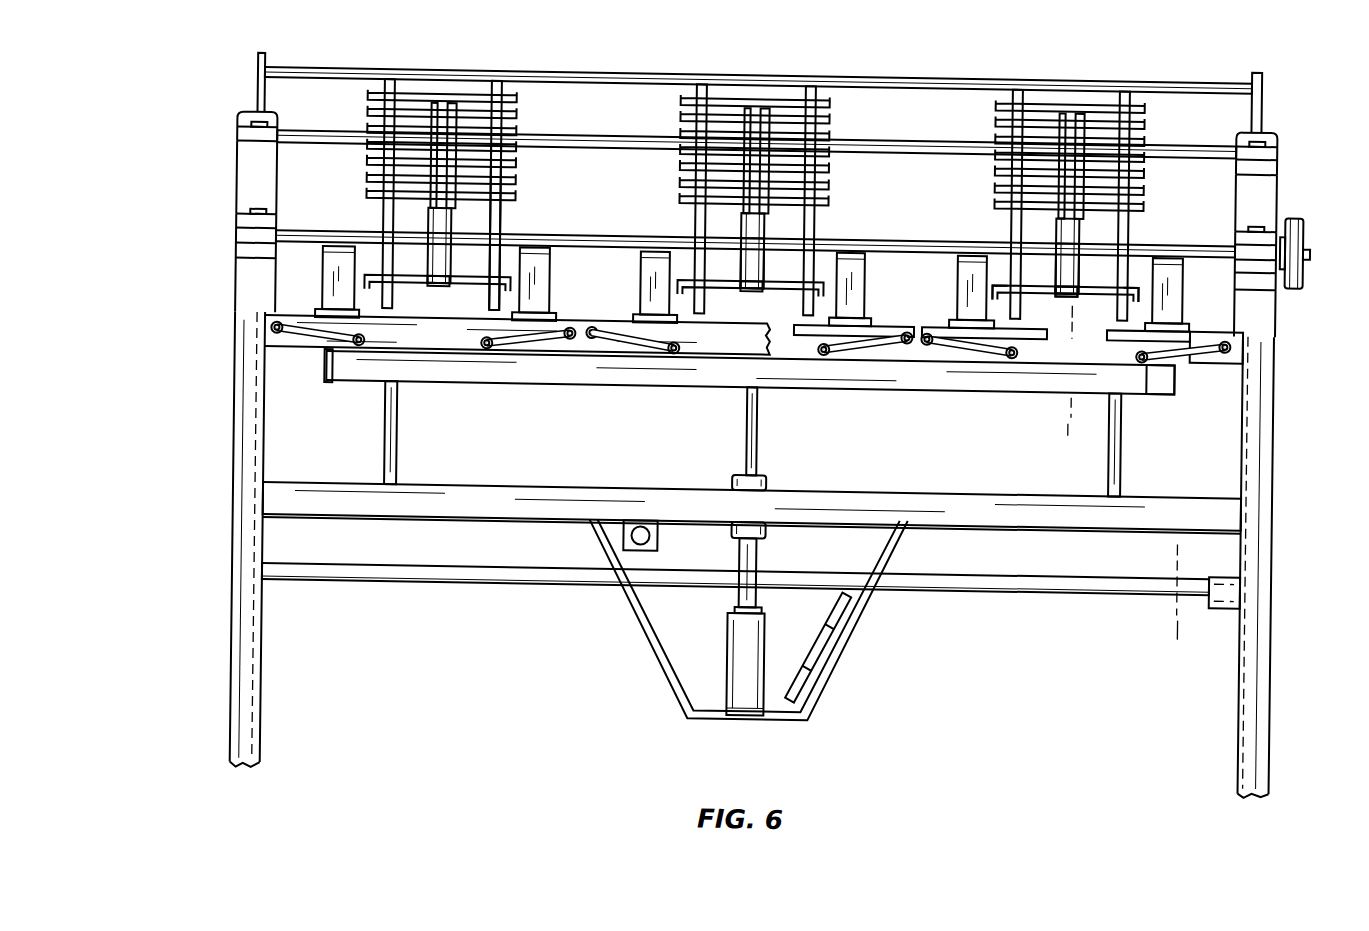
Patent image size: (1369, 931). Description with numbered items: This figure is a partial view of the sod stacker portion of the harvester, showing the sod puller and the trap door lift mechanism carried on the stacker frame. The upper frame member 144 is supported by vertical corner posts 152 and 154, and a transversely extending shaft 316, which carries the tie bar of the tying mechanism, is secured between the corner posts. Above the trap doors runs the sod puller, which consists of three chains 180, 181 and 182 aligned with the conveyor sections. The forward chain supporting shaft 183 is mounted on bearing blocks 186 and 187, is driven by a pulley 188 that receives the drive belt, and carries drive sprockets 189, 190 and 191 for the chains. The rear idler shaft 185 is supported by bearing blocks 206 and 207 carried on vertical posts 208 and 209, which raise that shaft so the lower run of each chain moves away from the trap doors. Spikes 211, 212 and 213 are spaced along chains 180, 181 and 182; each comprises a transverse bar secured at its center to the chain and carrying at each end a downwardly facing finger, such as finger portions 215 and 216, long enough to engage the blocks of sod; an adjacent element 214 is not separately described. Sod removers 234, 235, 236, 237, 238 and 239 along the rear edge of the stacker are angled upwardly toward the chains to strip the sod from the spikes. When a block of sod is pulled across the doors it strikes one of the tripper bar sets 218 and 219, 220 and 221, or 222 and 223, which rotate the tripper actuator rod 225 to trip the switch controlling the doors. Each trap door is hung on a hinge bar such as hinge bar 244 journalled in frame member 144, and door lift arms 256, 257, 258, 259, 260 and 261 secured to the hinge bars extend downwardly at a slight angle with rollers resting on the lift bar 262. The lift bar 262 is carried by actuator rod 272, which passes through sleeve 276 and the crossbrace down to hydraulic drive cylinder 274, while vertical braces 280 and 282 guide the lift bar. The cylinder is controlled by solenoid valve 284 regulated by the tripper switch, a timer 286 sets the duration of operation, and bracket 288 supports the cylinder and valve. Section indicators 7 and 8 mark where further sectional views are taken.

The tripper actuator rod 225 is at (944, 68).
The rear idler shaft 185 is at (572, 130).
The forward chain supporting shaft 183 is at (561, 228).
The bearing block 207 is at (240, 150).
The vertical post 209 is at (245, 188).
The bearing block 187 is at (245, 243).
The bearing block 206 is at (1258, 136).
The vertical post 208 is at (1252, 185).
The bearing block 186 is at (1260, 224).
The pulley 188 is at (1292, 223).
The vertical corner post 154 is at (238, 460).
The vertical corner post 152 is at (1278, 474).
The tripper bar 223 is at (388, 196).
The tripper bar 222 is at (505, 188).
The drive sprocket 191 is at (495, 212).
The sod puller chain 182 is at (430, 213).
The sod spikes 213 is at (468, 268).
The tripper bar 221 is at (700, 201).
The tripper bar 220 is at (816, 188).
The sod puller chain 181 is at (746, 212).
The drive sprocket 190 is at (769, 210).
The sod spikes 212 is at (782, 264).
The tripper bar 219 is at (1014, 215).
The tripper bar 218 is at (1126, 204).
The sod puller chain 180 is at (1059, 188).
The drive sprocket 189 is at (1083, 219).
The rack bracket 214 is at (1100, 273).
The sod spikes 211 is at (1042, 270).
The finger portion 216 is at (996, 264).
The finger portion 215 is at (1143, 282).
The sod remover 239 is at (324, 282).
The sod remover 238 is at (550, 270).
The sod remover 237 is at (650, 279).
The sod remover 236 is at (858, 291).
The sod remover 235 is at (961, 295).
The sod remover 234 is at (1178, 297).
The upper frame member 144 is at (593, 325).
The door lift arm 260 is at (548, 340).
The door lift arm 259 is at (640, 337).
The door lift arm 258 is at (877, 338).
The door lift arm 257 is at (984, 336).
The hinge bar 244 is at (1226, 346).
The lift bar 262 is at (801, 368).
The door lift arm 261 is at (338, 357).
The door lift arm 256 is at (1186, 349).
The vertical brace 282 is at (401, 457).
The actuator rod 272 is at (761, 427).
The vertical brace 280 is at (1125, 448).
The sleeve 276 is at (772, 473).
The hydraulic drive cylinder 274 is at (768, 616).
The timer 286 is at (660, 542).
The bracket 288 is at (897, 546).
The solenoid valve 284 is at (834, 632).
The transversely extending shaft 316 is at (1032, 580).
The section line 7 is at (1052, 422).
The section line 8 is at (1210, 624).